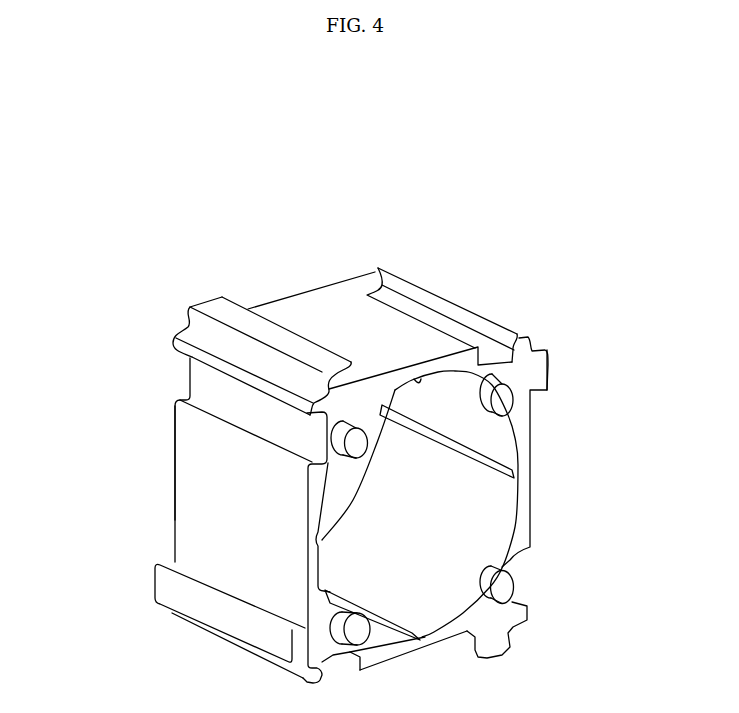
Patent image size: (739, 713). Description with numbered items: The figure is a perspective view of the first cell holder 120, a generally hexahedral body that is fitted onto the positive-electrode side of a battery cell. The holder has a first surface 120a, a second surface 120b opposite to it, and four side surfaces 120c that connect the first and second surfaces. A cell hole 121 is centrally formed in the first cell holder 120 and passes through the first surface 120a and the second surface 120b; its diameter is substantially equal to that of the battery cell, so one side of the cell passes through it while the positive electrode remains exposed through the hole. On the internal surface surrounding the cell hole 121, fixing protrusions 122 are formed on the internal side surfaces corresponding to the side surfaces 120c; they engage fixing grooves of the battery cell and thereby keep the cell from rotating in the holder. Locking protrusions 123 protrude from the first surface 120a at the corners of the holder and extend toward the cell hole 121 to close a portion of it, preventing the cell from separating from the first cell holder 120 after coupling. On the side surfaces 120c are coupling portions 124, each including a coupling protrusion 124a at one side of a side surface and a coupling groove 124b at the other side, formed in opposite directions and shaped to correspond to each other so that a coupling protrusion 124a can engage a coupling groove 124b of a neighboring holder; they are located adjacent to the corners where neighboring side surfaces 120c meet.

The first cell holder 120 is at (90, 164).
The first surface 120a is at (316, 473).
The second surface 120b is at (174, 483).
The side surfaces 120c is at (192, 530).
The cell hole 121 is at (448, 547).
The fixing protrusions 122 is at (520, 475).
The locking protrusions 123 is at (504, 394).
The coupling portions 124 is at (323, 200).
The coupling protrusion 124a is at (338, 372).
The coupling groove 124b is at (497, 360).